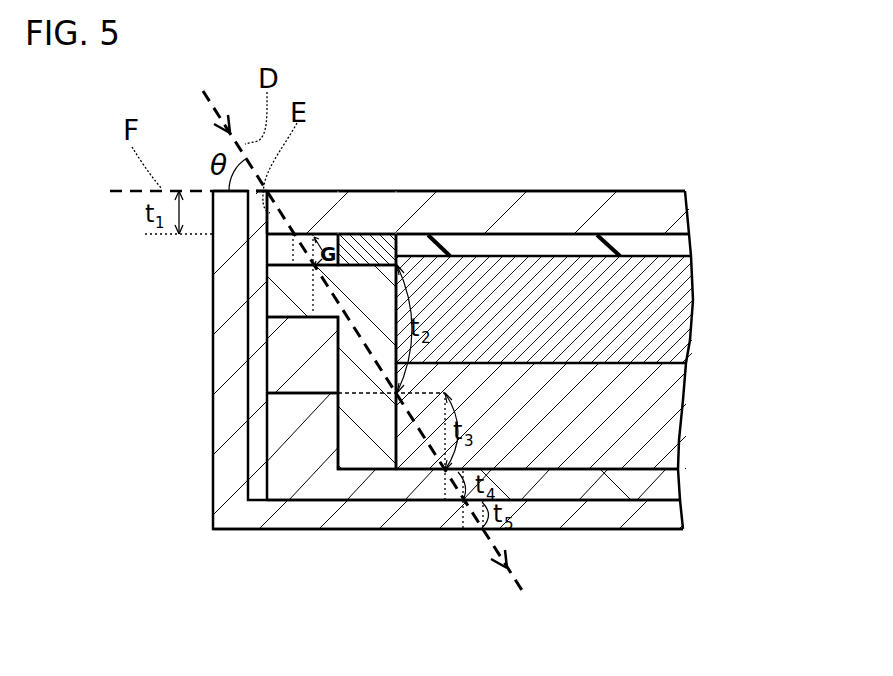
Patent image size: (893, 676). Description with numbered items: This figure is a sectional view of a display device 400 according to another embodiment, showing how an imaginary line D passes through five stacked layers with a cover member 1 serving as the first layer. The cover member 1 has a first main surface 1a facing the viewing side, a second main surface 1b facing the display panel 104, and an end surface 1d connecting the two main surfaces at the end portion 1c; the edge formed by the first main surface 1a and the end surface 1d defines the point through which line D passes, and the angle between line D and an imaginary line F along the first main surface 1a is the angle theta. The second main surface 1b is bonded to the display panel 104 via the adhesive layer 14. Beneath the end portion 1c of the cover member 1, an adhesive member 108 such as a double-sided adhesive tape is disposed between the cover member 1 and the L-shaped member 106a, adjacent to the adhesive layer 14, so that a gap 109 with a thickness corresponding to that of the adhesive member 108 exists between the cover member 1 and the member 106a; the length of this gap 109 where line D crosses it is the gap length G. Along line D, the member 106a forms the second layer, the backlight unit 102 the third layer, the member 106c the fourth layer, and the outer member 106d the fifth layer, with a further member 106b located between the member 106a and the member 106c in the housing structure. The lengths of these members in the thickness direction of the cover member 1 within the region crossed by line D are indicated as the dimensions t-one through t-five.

The display device 400 is at (690, 148).
The cover member 1 is at (482, 203).
The first main surface 1a is at (633, 190).
The second main surface 1b is at (553, 237).
The end portion 1c is at (362, 207).
The end surface 1d is at (307, 213).
The adhesive member 108 is at (372, 248).
The adhesive layer 14 is at (650, 248).
The display panel 104 is at (650, 308).
The backlight unit 102 is at (655, 428).
The gap 109 is at (283, 250).
The member of second layer 106a is at (277, 297).
The member 106b is at (297, 358).
The member of fourth layer 106c is at (297, 440).
The member of fifth layer 106d is at (313, 515).